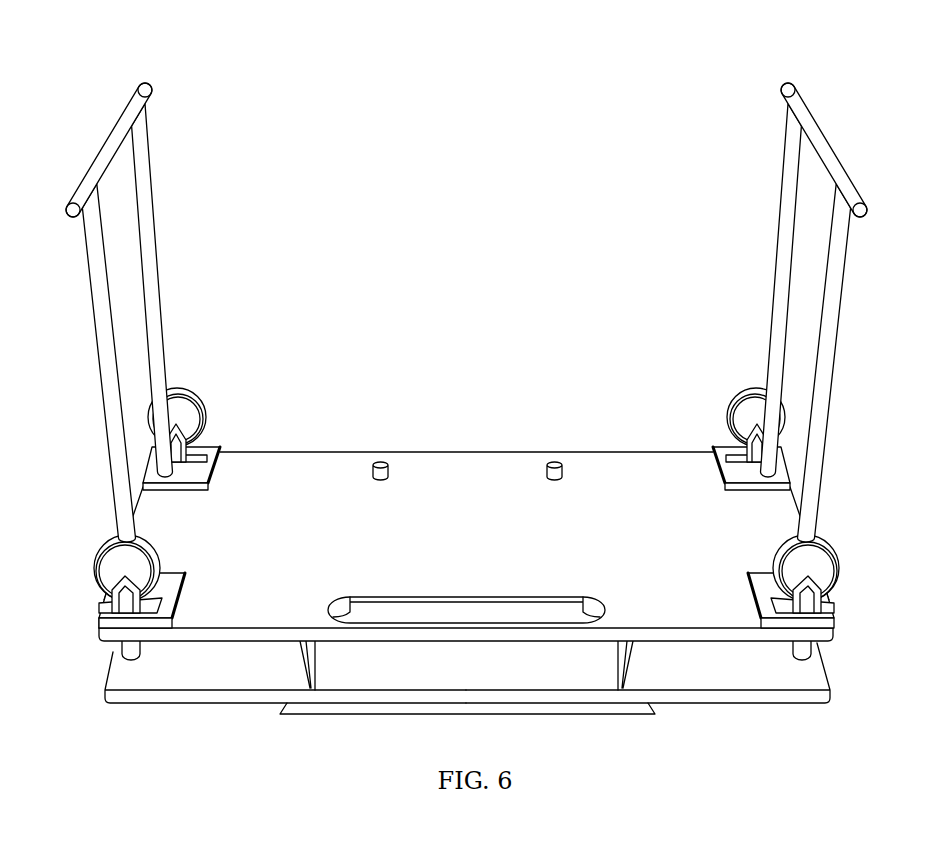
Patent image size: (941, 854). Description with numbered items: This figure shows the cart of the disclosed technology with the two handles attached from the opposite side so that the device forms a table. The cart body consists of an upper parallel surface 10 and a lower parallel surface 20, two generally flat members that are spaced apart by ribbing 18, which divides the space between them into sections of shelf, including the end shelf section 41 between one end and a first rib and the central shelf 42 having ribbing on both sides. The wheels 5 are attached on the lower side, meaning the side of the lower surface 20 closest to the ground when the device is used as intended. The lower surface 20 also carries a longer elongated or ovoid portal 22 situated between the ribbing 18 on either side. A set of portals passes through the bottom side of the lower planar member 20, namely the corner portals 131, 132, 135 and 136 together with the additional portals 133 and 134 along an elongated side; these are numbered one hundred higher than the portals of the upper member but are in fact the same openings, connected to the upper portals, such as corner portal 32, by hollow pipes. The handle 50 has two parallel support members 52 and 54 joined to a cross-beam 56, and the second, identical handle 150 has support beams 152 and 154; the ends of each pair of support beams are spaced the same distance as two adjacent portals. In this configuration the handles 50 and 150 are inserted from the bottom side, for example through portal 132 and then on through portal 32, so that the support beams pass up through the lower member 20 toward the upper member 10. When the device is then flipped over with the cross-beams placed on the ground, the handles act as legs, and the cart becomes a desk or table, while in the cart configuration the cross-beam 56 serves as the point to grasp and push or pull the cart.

The wheels 5 is at (735, 405).
The upper parallel surface 10 is at (509, 691).
The ribbing 18 is at (305, 672).
The lower parallel surface 20 is at (466, 571).
The elongated portal 22 is at (555, 616).
The corner portal 32 is at (203, 667).
The shelf section 41 is at (713, 677).
The central shelf 42 is at (355, 672).
The handle 50 is at (827, 280).
The support member 52 is at (826, 151).
The support member 54 is at (784, 294).
The cross-beam 56 is at (833, 343).
The portal 131 is at (826, 581).
The portal 132 is at (803, 411).
The portal 133 is at (550, 464).
The portal 134 is at (378, 465).
The portal 135 is at (160, 472).
The portal 136 is at (110, 581).
The handle 150 is at (91, 301).
The support beam 152 is at (93, 187).
The support beam 154 is at (148, 333).